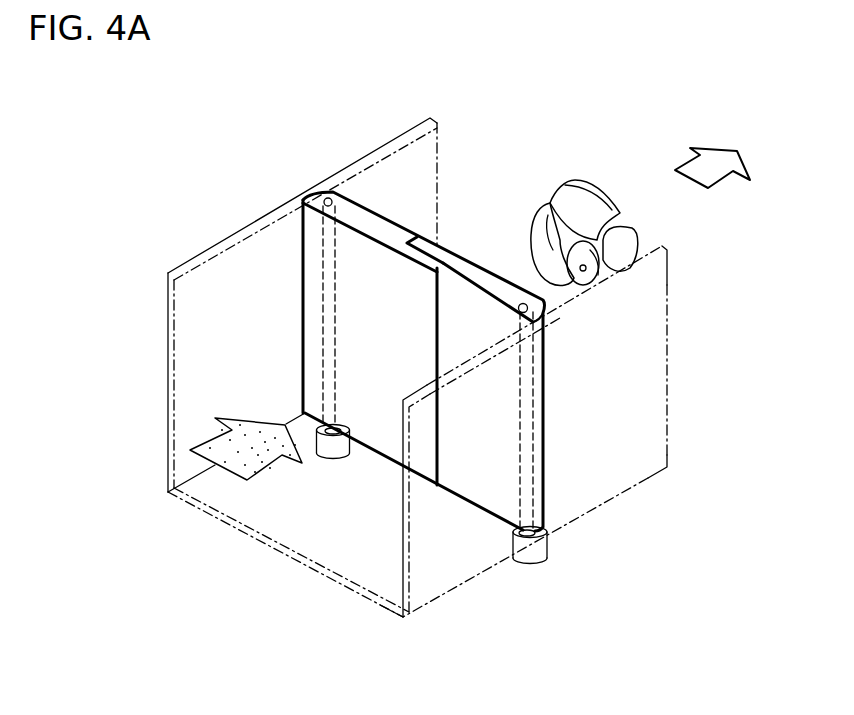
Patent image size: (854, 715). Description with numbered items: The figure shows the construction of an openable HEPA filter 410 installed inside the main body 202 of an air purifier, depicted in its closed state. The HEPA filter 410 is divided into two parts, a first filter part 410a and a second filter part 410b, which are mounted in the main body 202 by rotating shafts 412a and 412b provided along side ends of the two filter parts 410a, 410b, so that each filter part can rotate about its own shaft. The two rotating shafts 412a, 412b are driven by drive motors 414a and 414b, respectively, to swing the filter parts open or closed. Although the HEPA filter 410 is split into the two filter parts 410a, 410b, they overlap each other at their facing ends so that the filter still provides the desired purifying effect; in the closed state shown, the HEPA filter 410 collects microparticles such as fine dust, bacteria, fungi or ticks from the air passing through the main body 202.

The main body 202 is at (214, 247).
The HEPA filter 410 is at (455, 244).
The first filter part 410a is at (353, 212).
The second filter part 410b is at (493, 294).
The rotating shaft 412a is at (324, 199).
The rotating shaft 412b is at (534, 312).
The drive motor 414a is at (333, 456).
The drive motor 414b is at (548, 551).